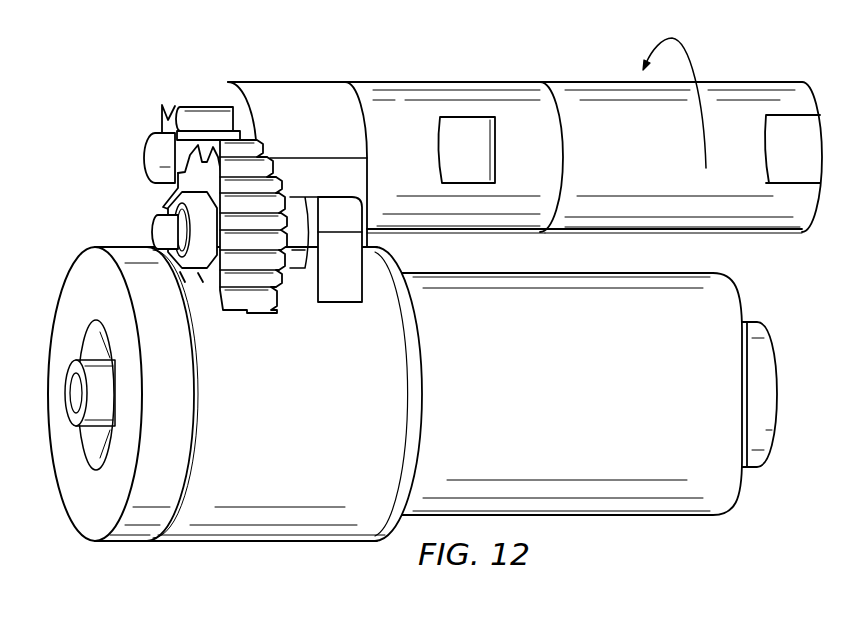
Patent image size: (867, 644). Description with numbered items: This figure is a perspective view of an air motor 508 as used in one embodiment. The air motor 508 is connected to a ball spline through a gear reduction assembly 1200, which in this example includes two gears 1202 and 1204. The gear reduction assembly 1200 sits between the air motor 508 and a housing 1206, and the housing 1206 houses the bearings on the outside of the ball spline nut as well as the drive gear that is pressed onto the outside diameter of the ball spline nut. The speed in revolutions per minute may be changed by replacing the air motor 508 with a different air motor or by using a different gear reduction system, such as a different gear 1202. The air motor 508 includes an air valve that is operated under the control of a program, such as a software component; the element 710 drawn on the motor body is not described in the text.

The air motor 508 is at (746, 62).
The inner tube 710 is at (507, 83).
The gear reduction assembly 1200 is at (122, 127).
The gear 1202 is at (184, 104).
The gear 1204 is at (249, 315).
The housing 1206 is at (318, 543).